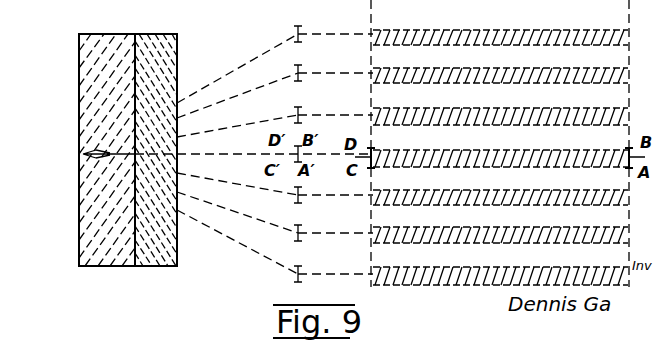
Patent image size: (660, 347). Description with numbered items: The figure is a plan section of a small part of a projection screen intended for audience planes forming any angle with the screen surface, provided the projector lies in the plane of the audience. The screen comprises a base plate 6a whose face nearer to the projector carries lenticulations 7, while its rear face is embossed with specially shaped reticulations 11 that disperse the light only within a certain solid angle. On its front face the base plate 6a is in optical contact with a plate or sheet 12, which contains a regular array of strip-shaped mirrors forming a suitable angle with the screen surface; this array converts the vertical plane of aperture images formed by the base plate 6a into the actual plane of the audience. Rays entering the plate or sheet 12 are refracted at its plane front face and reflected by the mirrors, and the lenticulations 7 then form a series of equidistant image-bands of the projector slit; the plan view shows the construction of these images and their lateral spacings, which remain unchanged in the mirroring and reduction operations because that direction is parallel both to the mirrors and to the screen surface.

The reticulations 11 is at (78, 53).
The base plate 6a is at (95, 50).
The lenticulations 7 is at (135, 41).
The plate or sheet 12 is at (153, 58).